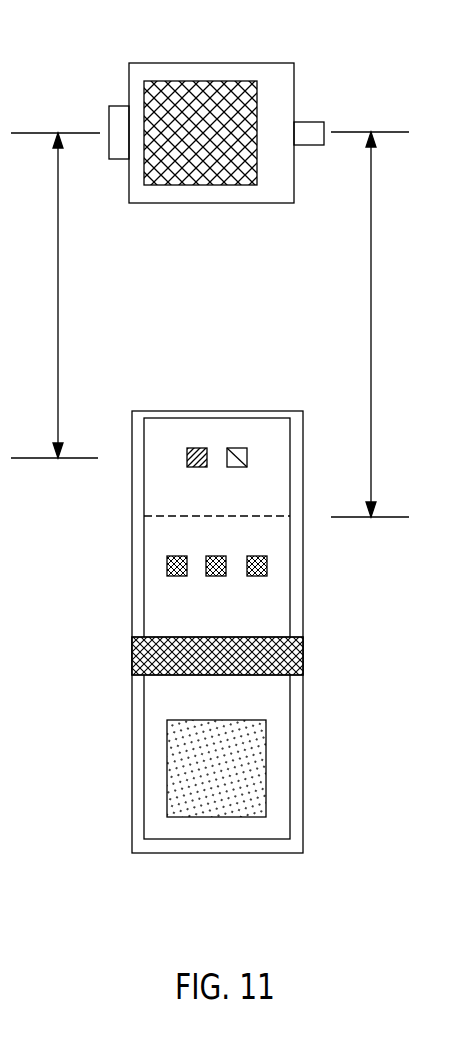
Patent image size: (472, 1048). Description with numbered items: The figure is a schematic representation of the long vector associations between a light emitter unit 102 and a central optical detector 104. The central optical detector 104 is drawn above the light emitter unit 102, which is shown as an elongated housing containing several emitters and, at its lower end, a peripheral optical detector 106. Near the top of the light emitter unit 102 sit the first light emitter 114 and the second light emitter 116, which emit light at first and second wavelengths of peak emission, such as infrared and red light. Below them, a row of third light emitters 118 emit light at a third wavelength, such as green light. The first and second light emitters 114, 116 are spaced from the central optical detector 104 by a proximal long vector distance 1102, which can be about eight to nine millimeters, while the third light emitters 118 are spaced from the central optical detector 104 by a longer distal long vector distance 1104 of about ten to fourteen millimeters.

The light emitter unit 102 is at (172, 535).
The central optical detector 104 is at (278, 63).
The peripheral optical detector 106 is at (177, 795).
The first light emitter 114 is at (197, 448).
The second light emitter 116 is at (239, 448).
The third light emitter 118 is at (257, 576).
The proximal long vector distance 1102 is at (55, 295).
The distal long vector distance 1104 is at (375, 324).